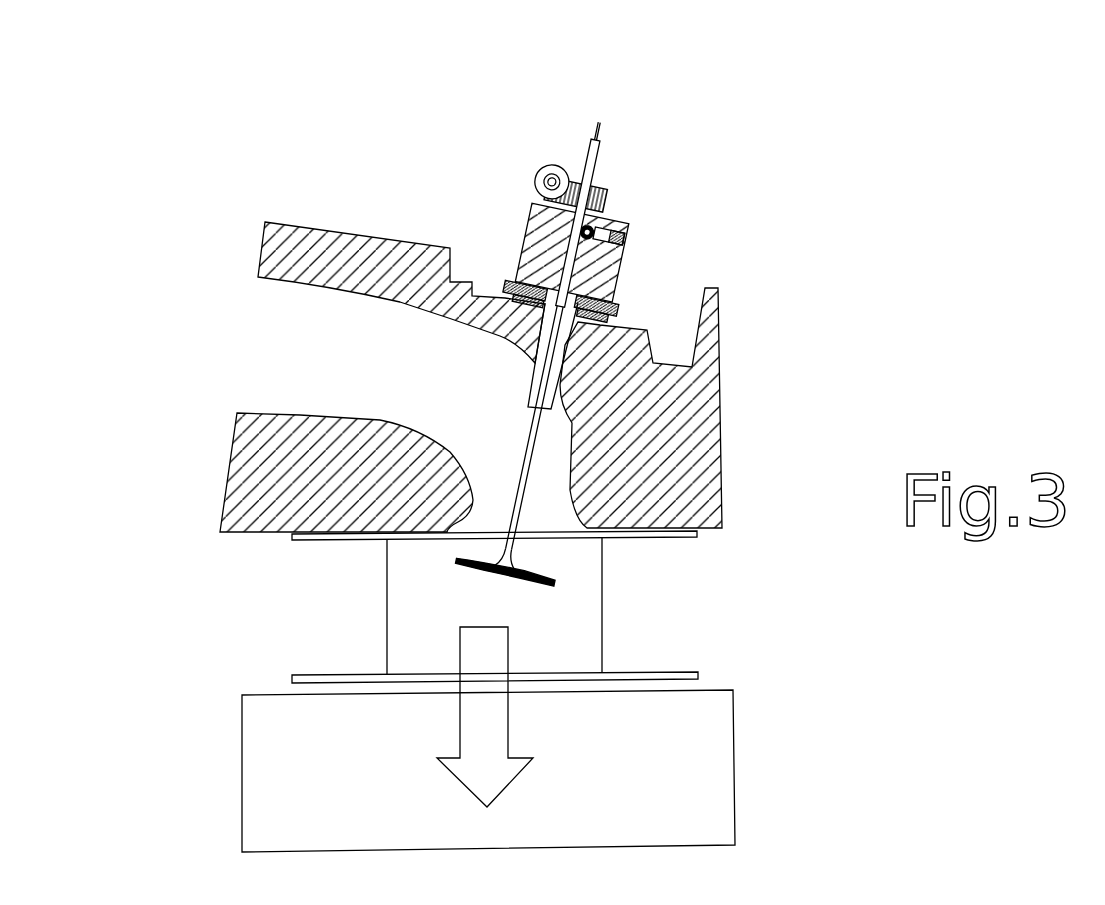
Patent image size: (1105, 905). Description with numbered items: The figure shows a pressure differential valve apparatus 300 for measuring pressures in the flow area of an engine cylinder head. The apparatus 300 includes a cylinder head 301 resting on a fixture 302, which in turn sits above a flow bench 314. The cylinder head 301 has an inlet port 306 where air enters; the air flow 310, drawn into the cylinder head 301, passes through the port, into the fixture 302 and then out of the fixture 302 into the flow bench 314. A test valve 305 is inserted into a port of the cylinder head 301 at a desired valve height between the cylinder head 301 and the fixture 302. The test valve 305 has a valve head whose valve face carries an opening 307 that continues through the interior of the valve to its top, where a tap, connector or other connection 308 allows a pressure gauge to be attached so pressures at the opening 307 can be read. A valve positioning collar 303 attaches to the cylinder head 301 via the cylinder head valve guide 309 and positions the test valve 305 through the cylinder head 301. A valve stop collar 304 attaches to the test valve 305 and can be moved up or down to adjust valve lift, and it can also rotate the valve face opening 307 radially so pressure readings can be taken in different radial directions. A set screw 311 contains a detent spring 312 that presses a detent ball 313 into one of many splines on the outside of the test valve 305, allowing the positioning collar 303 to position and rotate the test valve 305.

The apparatus 300 is at (912, 90).
The cylinder head 301 is at (498, 377).
The fixture 302 is at (400, 597).
The valve positioning collar 303 is at (615, 281).
The valve stop collar 304 is at (575, 175).
The test valve 305 is at (525, 447).
The inlet port 306 is at (325, 328).
The opening 307 is at (552, 582).
The connection 308 is at (595, 132).
The cylinder head valve guide 309 is at (565, 340).
The air flow 310 is at (493, 642).
The set screw 311 is at (635, 233).
The detent spring 312 is at (618, 222).
The detent ball 313 is at (605, 283).
The flow bench 314 is at (650, 763).